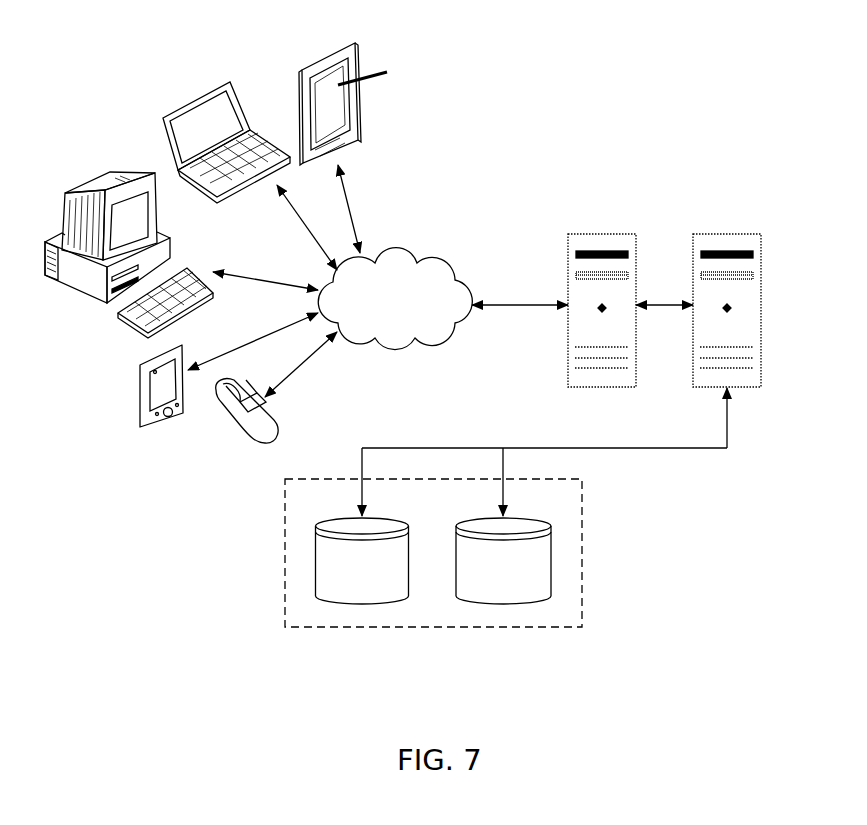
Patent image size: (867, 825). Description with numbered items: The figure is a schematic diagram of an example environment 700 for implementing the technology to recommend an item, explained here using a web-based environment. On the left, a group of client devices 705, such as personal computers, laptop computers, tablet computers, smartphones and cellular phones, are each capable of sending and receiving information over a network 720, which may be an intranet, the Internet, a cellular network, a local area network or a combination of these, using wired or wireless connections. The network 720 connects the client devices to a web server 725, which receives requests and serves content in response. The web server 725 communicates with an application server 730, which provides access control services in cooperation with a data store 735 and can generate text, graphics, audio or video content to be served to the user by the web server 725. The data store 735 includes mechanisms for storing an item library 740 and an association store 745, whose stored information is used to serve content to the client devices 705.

The environment 700 is at (684, 86).
The client device 705 is at (259, 75).
The network 720 is at (395, 299).
The web server 725 is at (568, 372).
The application server 730 is at (693, 360).
The data store 735 is at (284, 616).
The item library 740 is at (377, 604).
The association store 745 is at (517, 604).